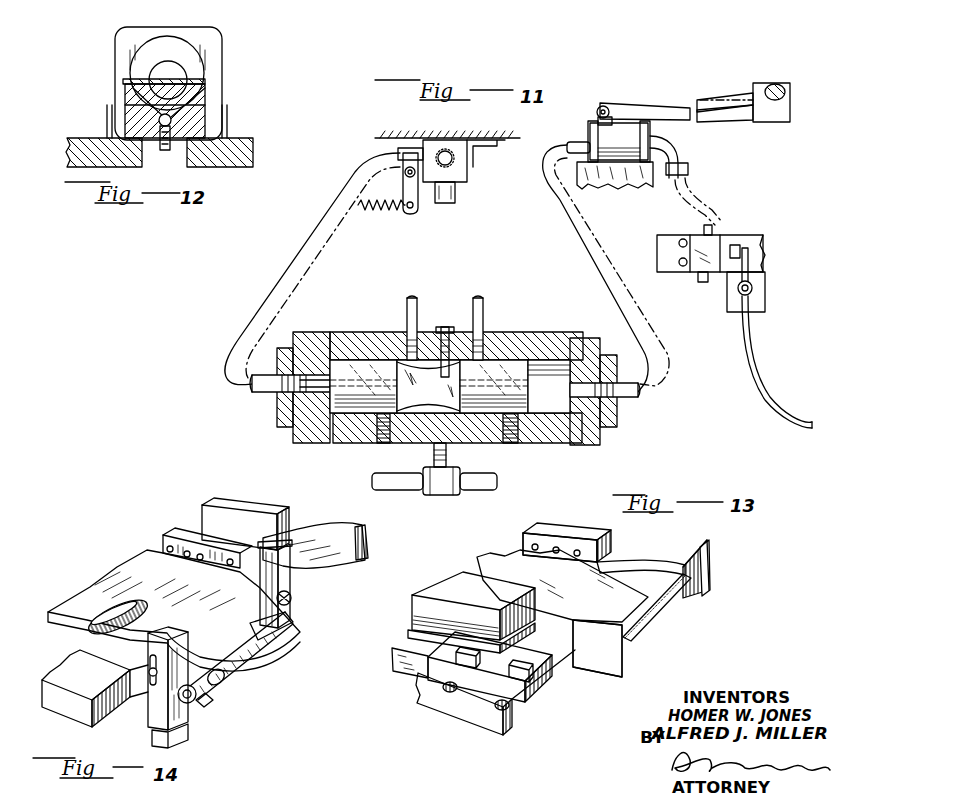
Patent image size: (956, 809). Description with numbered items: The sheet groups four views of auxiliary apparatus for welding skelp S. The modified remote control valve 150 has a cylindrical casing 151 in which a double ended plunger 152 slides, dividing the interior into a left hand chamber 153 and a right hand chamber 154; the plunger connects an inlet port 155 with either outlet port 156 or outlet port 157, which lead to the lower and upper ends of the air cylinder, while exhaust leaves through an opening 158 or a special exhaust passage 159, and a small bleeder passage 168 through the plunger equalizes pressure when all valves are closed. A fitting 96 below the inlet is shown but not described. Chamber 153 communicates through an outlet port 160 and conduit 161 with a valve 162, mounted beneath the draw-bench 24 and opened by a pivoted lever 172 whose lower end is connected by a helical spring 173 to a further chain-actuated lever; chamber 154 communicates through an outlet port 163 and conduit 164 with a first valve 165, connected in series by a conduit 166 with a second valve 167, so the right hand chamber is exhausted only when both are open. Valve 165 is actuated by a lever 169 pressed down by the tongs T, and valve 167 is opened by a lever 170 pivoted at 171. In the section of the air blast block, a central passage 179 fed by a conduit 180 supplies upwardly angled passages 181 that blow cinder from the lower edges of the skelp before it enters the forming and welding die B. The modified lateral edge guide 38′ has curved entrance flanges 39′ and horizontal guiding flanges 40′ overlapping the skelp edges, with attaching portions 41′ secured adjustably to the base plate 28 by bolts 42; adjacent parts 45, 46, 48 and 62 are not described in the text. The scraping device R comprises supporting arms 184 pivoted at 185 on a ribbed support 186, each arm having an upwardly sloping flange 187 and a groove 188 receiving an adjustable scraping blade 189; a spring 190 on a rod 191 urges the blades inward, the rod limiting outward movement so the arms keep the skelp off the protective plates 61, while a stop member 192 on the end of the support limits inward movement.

In FIG. 12, the forming and welding die B is at (205, 60).
In FIG. 12, the shaft / slide S is at (205, 82).
In FIG. 13, the shaft / slide S is at (667, 614).
In FIG. 11, the tongs T is at (768, 85).
In FIG. 14, the scraping devices R is at (320, 512).
In FIG. 12, the frame member 24 is at (253, 153).
In FIG. 11, the frame member 24 is at (490, 148).
In FIG. 13, the base plate 28 is at (508, 708).
In FIG. 14, the base plate 28 is at (77, 717).
In FIG. 13, the lateral edge guide 38′ is at (714, 564).
In FIG. 13, the entrance flanges 39′ is at (697, 593).
In FIG. 13, the guiding flanges 40′ is at (660, 567).
In FIG. 13, the attaching portions 41′ is at (538, 668).
In FIG. 13, the bolts 42 is at (513, 672).
In FIG. 13, the clamp block 45 is at (430, 590).
In FIG. 14, the clamp block 45 is at (233, 483).
In FIG. 13, the spacer plate 46 is at (407, 630).
In FIG. 13, the block 48 is at (462, 575).
In FIG. 13, the protective plates 61 is at (523, 537).
In FIG. 14, the protective plates 61 is at (167, 535).
In FIG. 13, the screw hole 62 is at (556, 550).
In FIG. 14, the screw hole 62 is at (202, 557).
In FIG. 11, the pipe tee 96 is at (393, 483).
In FIG. 11, the remote control valve 150 is at (352, 332).
In FIG. 11, the cylindrical casing 151 is at (550, 332).
In FIG. 11, the double ended piston or plunger 152 is at (343, 443).
In FIG. 11, the left hand chamber 153 is at (318, 402).
In FIG. 11, the right hand chamber 154 is at (549, 420).
In FIG. 11, the inlet port 155 is at (434, 447).
In FIG. 11, the outlet port 156 is at (392, 355).
In FIG. 11, the outlet port 157 is at (455, 305).
In FIG. 11, the opening 158 is at (506, 335).
In FIG. 11, the exhaust passage 159 is at (370, 355).
In FIG. 11, the outlet port 160 is at (325, 405).
In FIG. 11, the conduit 161 is at (287, 273).
In FIG. 11, the valve 162 is at (455, 177).
In FIG. 11, the outlet port 163 is at (590, 400).
In FIG. 11, the conduit 164 is at (580, 238).
In FIG. 11, the first valve 165 is at (612, 140).
In FIG. 11, the conduit 166 is at (700, 196).
In FIG. 11, the second valve 167 is at (698, 235).
In FIG. 11, the bleeder passage 168 is at (498, 360).
In FIG. 11, the lever 169 is at (717, 93).
In FIG. 11, the lever 170 is at (772, 393).
In FIG. 11, the pivot 171 is at (742, 288).
In FIG. 11, the lever 172 is at (418, 193).
In FIG. 11, the helical spring 173 is at (375, 212).
In FIG. 12, the central passage 179 is at (205, 120).
In FIG. 12, the conduit 180 is at (158, 147).
In FIG. 12, the passages 181 is at (122, 102).
In FIG. 14, the supporting arms 184 is at (295, 580).
In FIG. 14, the pivot 185 is at (291, 600).
In FIG. 14, the ribbed support 186 is at (87, 640).
In FIG. 14, the upwardly sloping flange 187 is at (362, 554).
In FIG. 14, the groove 188 is at (280, 537).
In FIG. 14, the scraping blade 189 is at (262, 580).
In FIG. 14, the spring 190 is at (233, 683).
In FIG. 14, the rod 191 is at (200, 705).
In FIG. 14, the stop member 192 is at (285, 625).